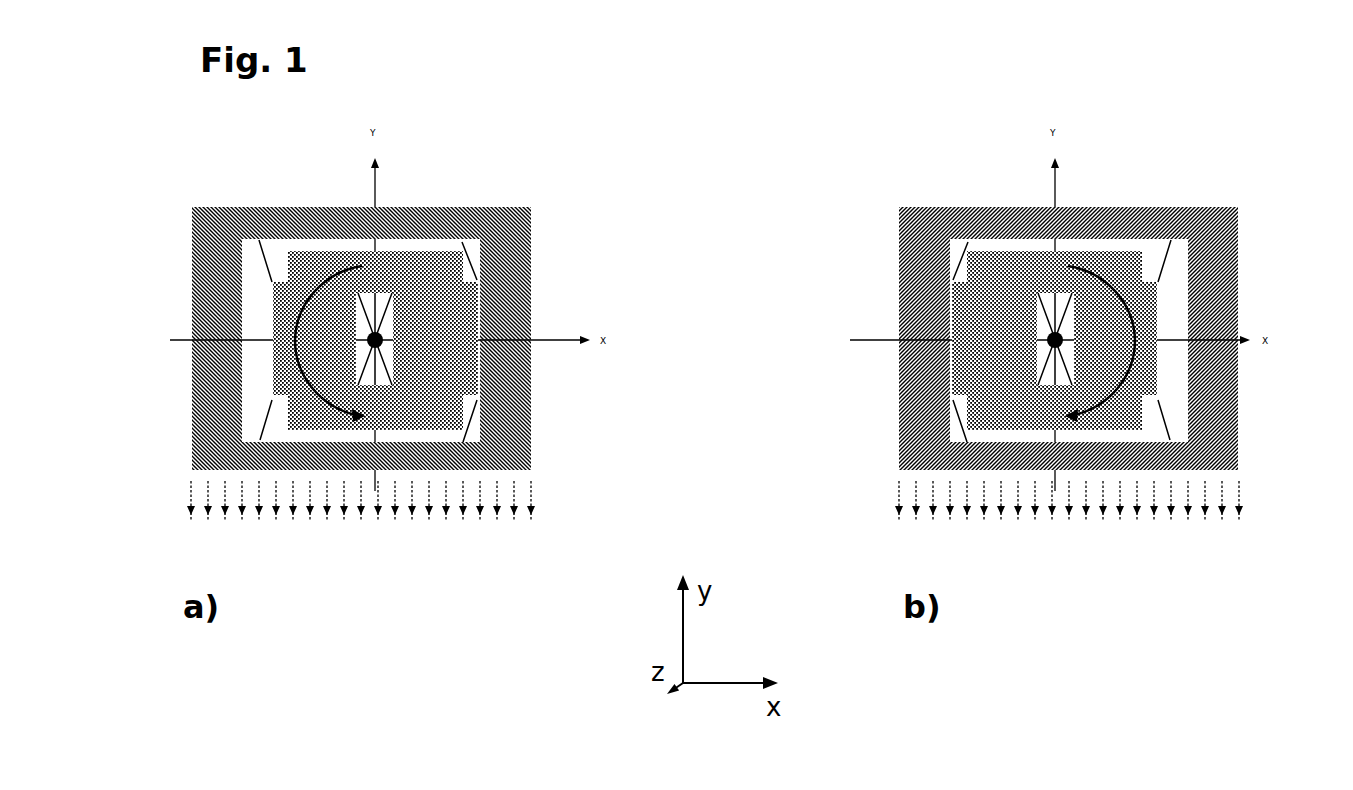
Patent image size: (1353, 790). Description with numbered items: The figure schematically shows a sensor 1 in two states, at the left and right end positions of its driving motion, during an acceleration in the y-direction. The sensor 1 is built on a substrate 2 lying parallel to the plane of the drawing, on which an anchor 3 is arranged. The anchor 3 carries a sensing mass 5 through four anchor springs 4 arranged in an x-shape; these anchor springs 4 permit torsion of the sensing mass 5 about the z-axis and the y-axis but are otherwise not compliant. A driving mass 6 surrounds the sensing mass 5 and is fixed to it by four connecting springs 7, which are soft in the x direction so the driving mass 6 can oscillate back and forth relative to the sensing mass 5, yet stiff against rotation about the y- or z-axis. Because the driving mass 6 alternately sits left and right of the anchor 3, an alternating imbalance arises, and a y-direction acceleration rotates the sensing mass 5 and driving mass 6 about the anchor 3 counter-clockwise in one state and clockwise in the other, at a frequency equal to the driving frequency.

The sensor 1 is at (440, 173).
The substrate 2 is at (326, 173).
The anchor 3 is at (380, 336).
The anchor springs 4 is at (385, 372).
The sensing mass 5 is at (278, 373).
The driving mass 6 is at (498, 252).
The connecting springs 7 is at (465, 431).